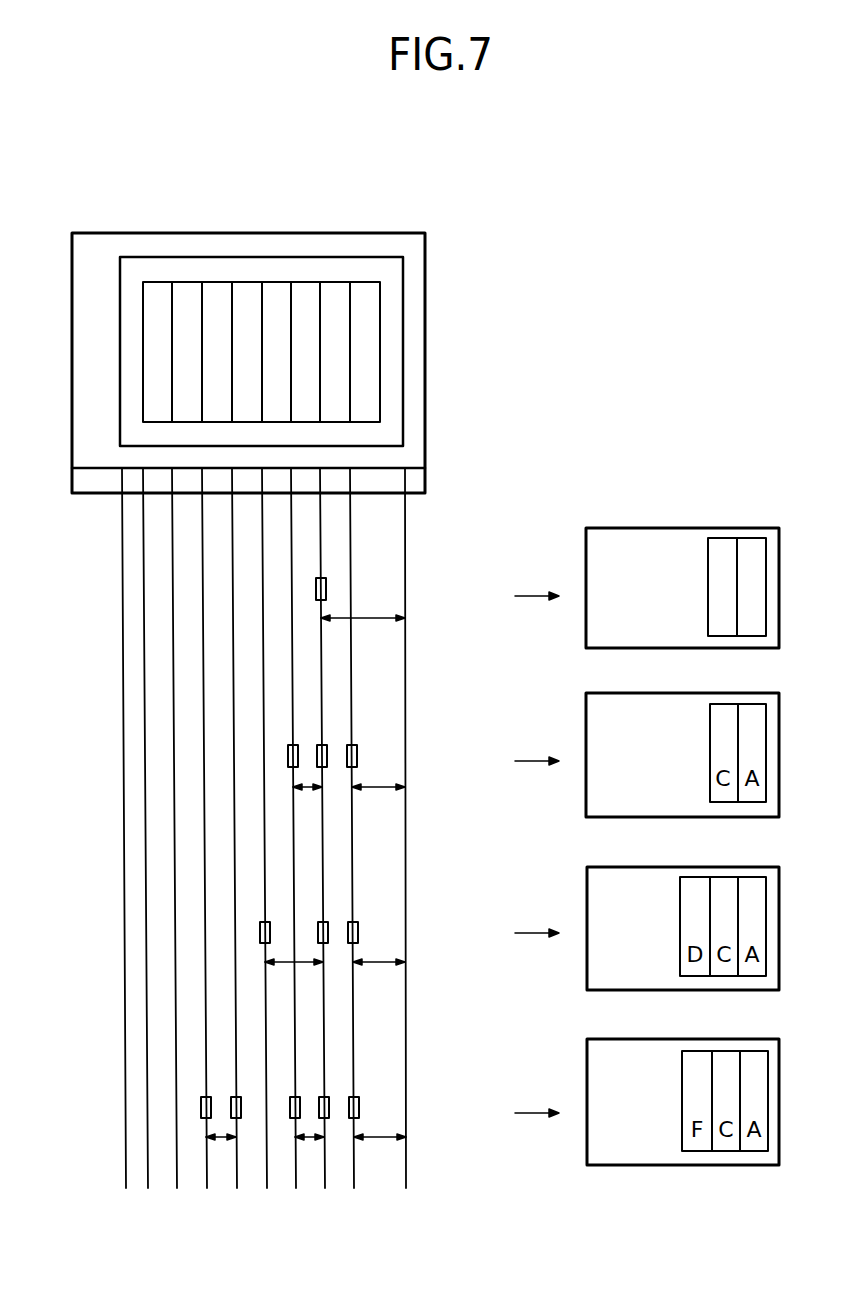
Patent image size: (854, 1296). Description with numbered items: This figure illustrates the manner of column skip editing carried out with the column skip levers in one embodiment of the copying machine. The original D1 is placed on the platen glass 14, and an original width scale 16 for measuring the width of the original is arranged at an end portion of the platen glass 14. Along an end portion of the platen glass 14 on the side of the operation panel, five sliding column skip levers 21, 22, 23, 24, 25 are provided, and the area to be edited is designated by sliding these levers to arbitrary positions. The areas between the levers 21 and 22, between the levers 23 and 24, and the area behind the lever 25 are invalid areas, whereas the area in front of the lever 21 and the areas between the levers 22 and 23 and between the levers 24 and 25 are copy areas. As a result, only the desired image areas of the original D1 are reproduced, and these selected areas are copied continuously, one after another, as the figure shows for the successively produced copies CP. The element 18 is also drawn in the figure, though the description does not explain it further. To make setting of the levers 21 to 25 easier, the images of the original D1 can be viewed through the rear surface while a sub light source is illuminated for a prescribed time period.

The original D1 is at (170, 268).
The platen glass 14 is at (322, 243).
The original width scale 16 is at (413, 243).
The lead-out portion 18 is at (373, 457).
The column skip lever 21 is at (326, 586).
The column skip lever 22 is at (323, 745).
The column skip lever 23 is at (294, 745).
The column skip lever 24 is at (236, 1097).
The column skip lever 25 is at (200, 1107).
The connector plug CP is at (690, 532).